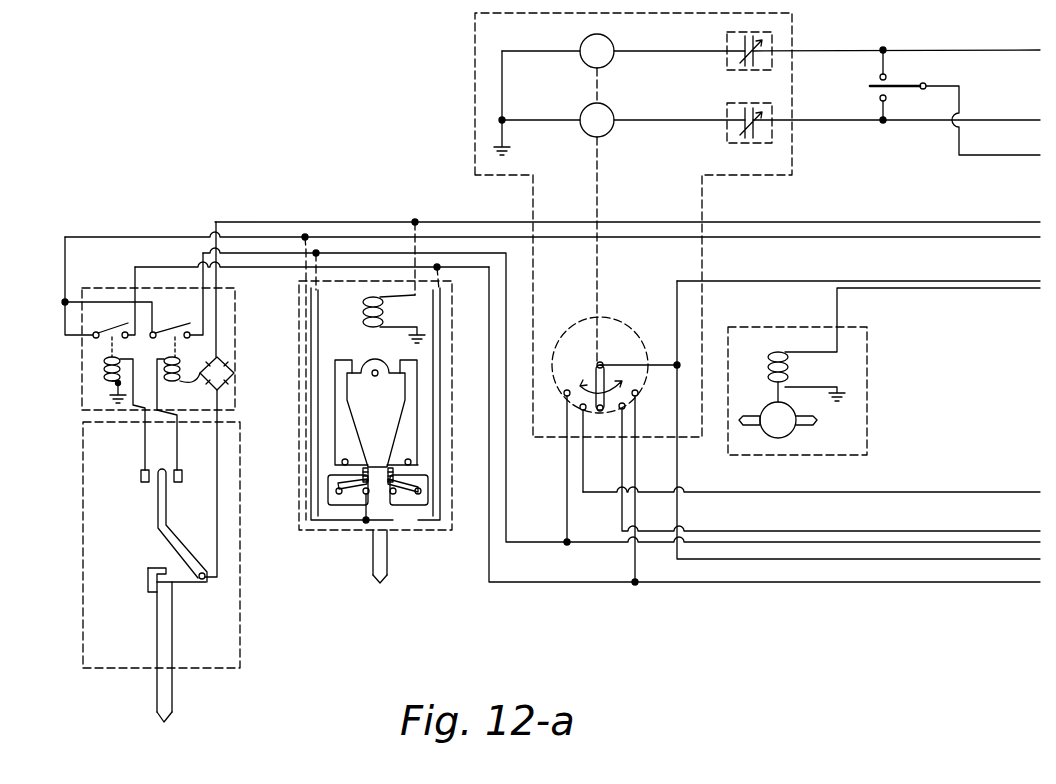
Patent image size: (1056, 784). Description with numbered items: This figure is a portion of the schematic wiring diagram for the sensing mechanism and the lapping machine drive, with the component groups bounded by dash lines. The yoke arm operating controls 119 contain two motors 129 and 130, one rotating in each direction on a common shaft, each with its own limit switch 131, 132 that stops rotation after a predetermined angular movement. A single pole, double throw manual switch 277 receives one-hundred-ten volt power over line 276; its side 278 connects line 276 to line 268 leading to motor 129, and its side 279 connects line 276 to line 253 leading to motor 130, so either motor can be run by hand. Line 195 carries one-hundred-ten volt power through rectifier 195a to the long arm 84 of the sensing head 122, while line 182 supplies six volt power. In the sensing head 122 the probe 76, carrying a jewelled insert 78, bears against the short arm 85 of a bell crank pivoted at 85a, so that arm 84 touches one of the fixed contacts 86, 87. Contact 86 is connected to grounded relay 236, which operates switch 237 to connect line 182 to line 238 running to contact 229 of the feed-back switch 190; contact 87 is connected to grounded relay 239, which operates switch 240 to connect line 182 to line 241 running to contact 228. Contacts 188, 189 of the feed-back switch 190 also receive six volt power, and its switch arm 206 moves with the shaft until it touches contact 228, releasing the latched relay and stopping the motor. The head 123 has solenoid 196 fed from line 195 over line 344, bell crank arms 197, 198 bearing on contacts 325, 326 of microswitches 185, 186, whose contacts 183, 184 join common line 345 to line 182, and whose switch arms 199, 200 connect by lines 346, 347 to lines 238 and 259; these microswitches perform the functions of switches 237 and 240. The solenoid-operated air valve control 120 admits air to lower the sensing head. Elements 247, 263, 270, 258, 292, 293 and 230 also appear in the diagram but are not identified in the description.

The yoke arm operating controls 119 is at (477, 35).
The motor 129 is at (609, 63).
The motor 130 is at (606, 138).
The limit switch 131 is at (727, 40).
The limit switch 132 is at (727, 111).
The line 268 is at (1030, 46).
The switch side 278 is at (880, 76).
The manual switch 277 is at (906, 84).
The switch side 279 is at (880, 99).
The line 253 is at (1034, 118).
The line 276 is at (1034, 154).
The line 195 is at (1038, 218).
The line 182 is at (1038, 250).
The line 238 is at (284, 256).
The line 344 is at (417, 245).
The line 241 is at (192, 270).
The conductor 247 is at (1038, 280).
The conductor 263 is at (1040, 291).
The conductor 270 is at (1038, 491).
The conductor 258 is at (1038, 562).
The line 259 is at (1040, 585).
The single pole single throw switch 240 is at (113, 331).
The relay 239 is at (100, 370).
The single pole single throw switch 237 is at (171, 331).
The relay 236 is at (194, 387).
The rectifier 195a is at (229, 367).
The sensing head 122 is at (83, 468).
The fixed contact 87 is at (141, 477).
The fixed contact 86 is at (183, 477).
The long arm 84 is at (167, 505).
The short arm 85 is at (182, 586).
The pivot 85a is at (208, 579).
The probe 76 is at (173, 696).
The insert 78 is at (168, 720).
The head 123 is at (299, 332).
The solenoid 196 is at (363, 312).
The common line 345 is at (311, 452).
The line 346 is at (318, 390).
The line 347 is at (440, 375).
The bell crank arm 197 is at (355, 430).
The bell crank arm 198 is at (407, 426).
The microswitch contact 325 is at (363, 474).
The microswitch contact 326 is at (393, 471).
The switch arm 199 is at (338, 487).
The switch arm 200 is at (420, 486).
The microswitch 185 is at (328, 500).
The microswitch 186 is at (428, 500).
The contact 183 is at (364, 495).
The contact 184 is at (396, 495).
The plunger 292 is at (372, 567).
The plunger tip 293 is at (384, 583).
The feed-back switch 190 is at (570, 331).
The switch arm 206 is at (597, 375).
The selector arm 230 is at (601, 413).
The contact 229 is at (564, 393).
The contact 189 is at (580, 408).
The contact 188 is at (626, 410).
The contact 228 is at (637, 395).
The solenoid-operated air valve control 120 is at (867, 357).